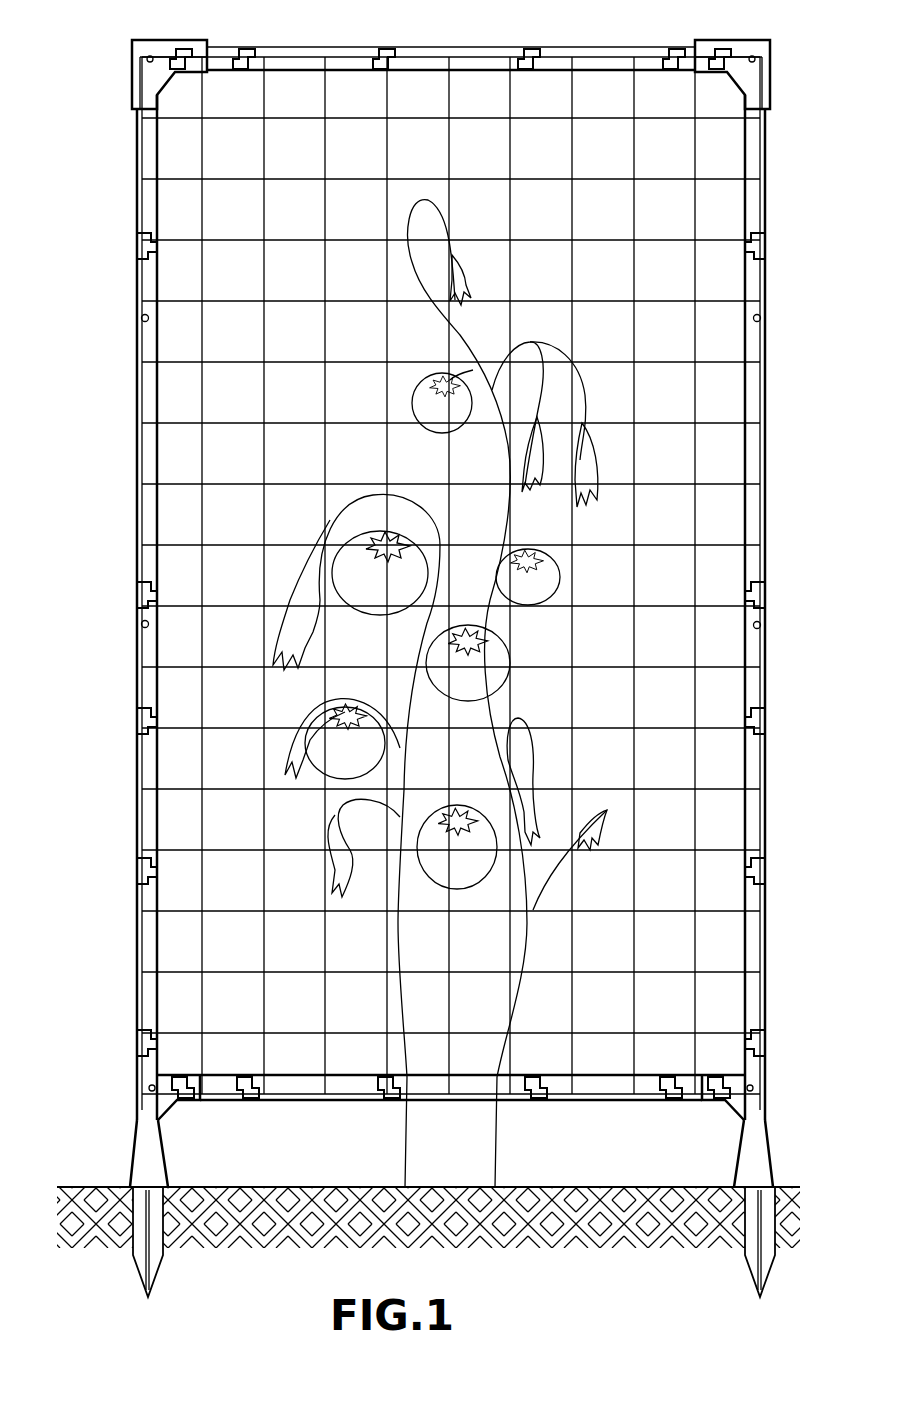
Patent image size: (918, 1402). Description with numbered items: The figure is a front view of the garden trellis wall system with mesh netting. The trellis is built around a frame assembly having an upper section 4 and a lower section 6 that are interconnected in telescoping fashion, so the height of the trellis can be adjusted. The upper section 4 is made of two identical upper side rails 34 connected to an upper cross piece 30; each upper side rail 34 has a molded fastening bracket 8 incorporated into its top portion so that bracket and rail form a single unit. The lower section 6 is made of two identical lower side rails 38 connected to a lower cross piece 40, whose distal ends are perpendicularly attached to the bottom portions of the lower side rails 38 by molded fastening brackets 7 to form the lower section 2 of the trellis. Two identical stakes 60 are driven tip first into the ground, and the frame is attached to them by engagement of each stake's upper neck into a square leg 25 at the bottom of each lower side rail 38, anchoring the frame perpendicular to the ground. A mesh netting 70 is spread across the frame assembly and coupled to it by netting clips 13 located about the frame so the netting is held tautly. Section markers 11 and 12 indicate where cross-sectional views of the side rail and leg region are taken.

The lower section 2 is at (300, 1107).
The upper section 4 is at (114, 351).
The lower section 6 is at (135, 770).
The fastening bracket 7 is at (186, 1100).
The fastening bracket 8 is at (136, 46).
The section line 11 is at (185, 623).
The section line 12 is at (130, 1130).
The netting clip 13 is at (533, 49).
The square leg 25 is at (137, 1162).
The upper cross piece 30 is at (477, 63).
The upper side rail 34 is at (140, 206).
The lower side rail 38 is at (140, 816).
The lower cross piece 40 is at (548, 1100).
The stake 60 is at (142, 1262).
The mesh netting 70 is at (703, 567).